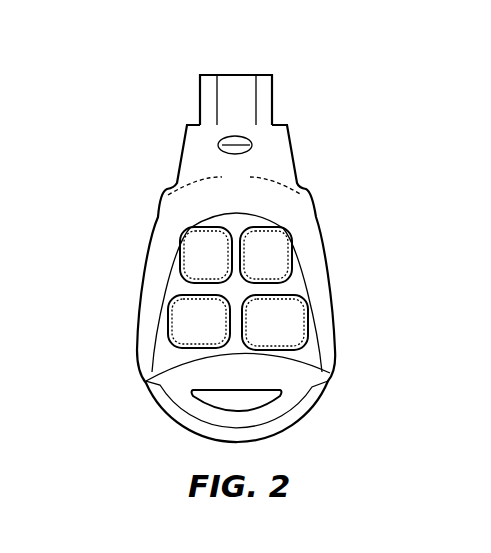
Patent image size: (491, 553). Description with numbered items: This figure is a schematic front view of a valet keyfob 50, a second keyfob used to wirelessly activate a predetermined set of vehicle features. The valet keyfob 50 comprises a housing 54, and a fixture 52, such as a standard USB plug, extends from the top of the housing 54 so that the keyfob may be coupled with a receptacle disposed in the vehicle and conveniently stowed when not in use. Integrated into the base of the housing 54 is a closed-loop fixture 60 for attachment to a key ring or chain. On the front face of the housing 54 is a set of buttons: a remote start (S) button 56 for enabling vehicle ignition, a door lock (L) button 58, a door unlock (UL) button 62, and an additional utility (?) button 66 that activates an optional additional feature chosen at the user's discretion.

The valet keyfob 50 is at (136, 32).
The fixture 52 is at (268, 73).
The housing 54 is at (178, 219).
The remote start (S) button 56 is at (188, 272).
The door lock (L) button 58 is at (278, 260).
The closed-loop fixture 60 is at (310, 402).
The door unlock (UL) button 62 is at (175, 341).
The utility (?) button 66 is at (293, 313).